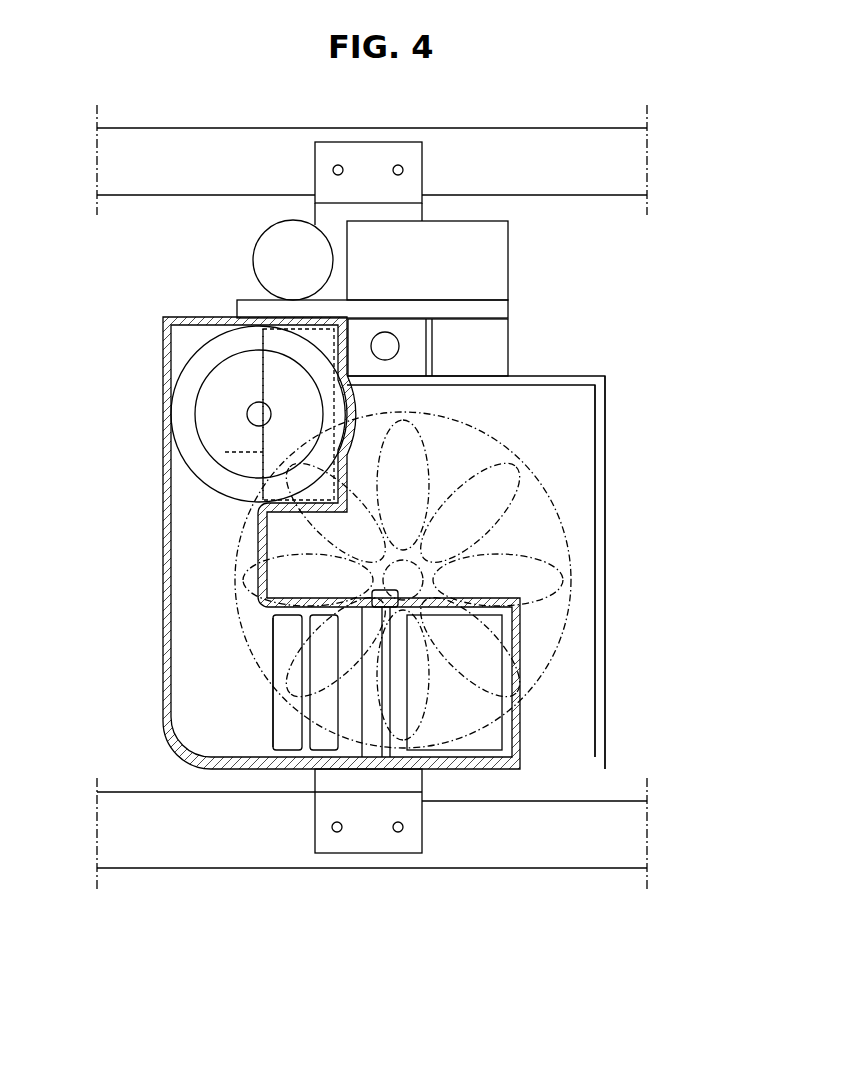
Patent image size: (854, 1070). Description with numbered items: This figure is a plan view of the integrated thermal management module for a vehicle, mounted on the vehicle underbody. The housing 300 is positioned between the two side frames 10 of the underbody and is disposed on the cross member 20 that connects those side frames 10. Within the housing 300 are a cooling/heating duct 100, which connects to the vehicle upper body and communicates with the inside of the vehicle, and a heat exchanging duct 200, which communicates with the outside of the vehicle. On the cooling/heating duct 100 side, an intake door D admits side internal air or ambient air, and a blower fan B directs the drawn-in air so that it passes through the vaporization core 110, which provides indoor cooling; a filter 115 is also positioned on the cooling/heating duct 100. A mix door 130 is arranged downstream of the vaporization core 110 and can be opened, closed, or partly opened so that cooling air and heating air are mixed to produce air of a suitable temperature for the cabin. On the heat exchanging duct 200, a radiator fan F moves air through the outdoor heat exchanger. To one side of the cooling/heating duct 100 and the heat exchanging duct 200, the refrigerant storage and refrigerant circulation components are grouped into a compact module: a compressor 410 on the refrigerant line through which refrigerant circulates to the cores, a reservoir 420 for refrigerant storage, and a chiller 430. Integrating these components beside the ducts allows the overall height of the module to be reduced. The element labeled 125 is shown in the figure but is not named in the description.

The side frames 10 is at (620, 163).
The cross member 20 is at (398, 853).
The cooling/heating duct 100 is at (203, 580).
The vaporization core 110 is at (323, 702).
The filter 115 is at (280, 722).
The duct box 125 is at (502, 680).
The mix door 130 is at (365, 745).
The heat exchanging duct 200 is at (570, 430).
The housing 300 is at (603, 580).
The compressor 410 is at (487, 262).
The reservoir 420 is at (405, 336).
The chiller 430 is at (488, 358).
The blower fan B is at (183, 414).
The intake door D is at (205, 462).
The radiator fan F is at (550, 502).